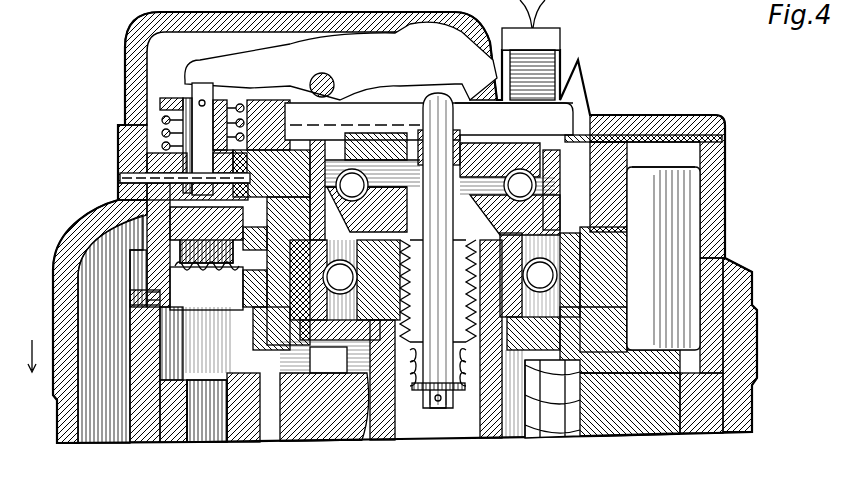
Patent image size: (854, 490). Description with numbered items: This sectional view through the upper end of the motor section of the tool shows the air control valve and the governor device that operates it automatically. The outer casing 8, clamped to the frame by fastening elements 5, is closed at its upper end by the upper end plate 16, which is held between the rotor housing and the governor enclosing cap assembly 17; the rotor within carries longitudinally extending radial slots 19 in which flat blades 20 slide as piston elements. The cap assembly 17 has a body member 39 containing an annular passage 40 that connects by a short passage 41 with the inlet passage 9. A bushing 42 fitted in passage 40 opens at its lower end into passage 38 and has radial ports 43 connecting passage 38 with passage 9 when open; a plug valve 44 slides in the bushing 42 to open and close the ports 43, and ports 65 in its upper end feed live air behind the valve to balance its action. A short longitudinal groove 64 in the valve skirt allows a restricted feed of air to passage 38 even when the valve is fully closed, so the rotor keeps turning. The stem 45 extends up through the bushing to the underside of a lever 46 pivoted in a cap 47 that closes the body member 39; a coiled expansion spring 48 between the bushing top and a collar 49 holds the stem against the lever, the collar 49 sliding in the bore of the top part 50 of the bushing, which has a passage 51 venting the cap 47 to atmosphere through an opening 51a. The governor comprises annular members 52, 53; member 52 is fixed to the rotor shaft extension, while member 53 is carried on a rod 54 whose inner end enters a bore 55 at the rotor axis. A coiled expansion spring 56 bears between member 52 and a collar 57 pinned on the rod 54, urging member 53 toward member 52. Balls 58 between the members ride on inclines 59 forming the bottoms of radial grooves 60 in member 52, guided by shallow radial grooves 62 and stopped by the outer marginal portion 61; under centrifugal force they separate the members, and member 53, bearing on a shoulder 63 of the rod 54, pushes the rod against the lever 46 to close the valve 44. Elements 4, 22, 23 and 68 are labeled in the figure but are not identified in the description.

The base 4 is at (755, 436).
The fastening elements 5 is at (115, 353).
The casing 8 is at (58, 445).
The inlet passage 9 is at (116, 436).
The upper end plate 16 is at (708, 340).
The governor enclosing cap assembly 17 is at (732, 145).
The radial slots 19 is at (330, 437).
The blades 20 is at (655, 438).
The passage 22 is at (522, 379).
The port 23 is at (540, 432).
The passage 38 is at (218, 434).
The body member 39 is at (130, 306).
The annular passage 40 is at (700, 252).
The short passage 41 is at (134, 278).
The bushing 42 is at (150, 228).
The radial ports 43 is at (150, 292).
The plug valve 44 is at (170, 250).
The stem 45 is at (200, 90).
The lever 46 is at (350, 75).
The cap 47 is at (128, 30).
The coiled expansion spring 48 is at (162, 127).
The collar 49 is at (160, 106).
The top part of the bushing 50 is at (147, 162).
The passage 51 is at (240, 182).
The opening 51a is at (125, 178).
The annular member 52 is at (553, 212).
The annular member 53 is at (580, 62).
The rod 54 is at (448, 415).
The bore or recess 55 is at (430, 430).
The coiled expansion spring 56 is at (500, 437).
The collar 57 is at (368, 440).
The balls 58 is at (560, 183).
The inclines 59 is at (370, 217).
The radial grooves 60 is at (495, 213).
The outer marginal portion 61 is at (580, 130).
The shallow radial grooves 62 is at (367, 220).
The shoulder 63 is at (503, 150).
The longitudinal groove 64 is at (206, 286).
The ports 65 is at (175, 237).
The ball 68 is at (548, 276).